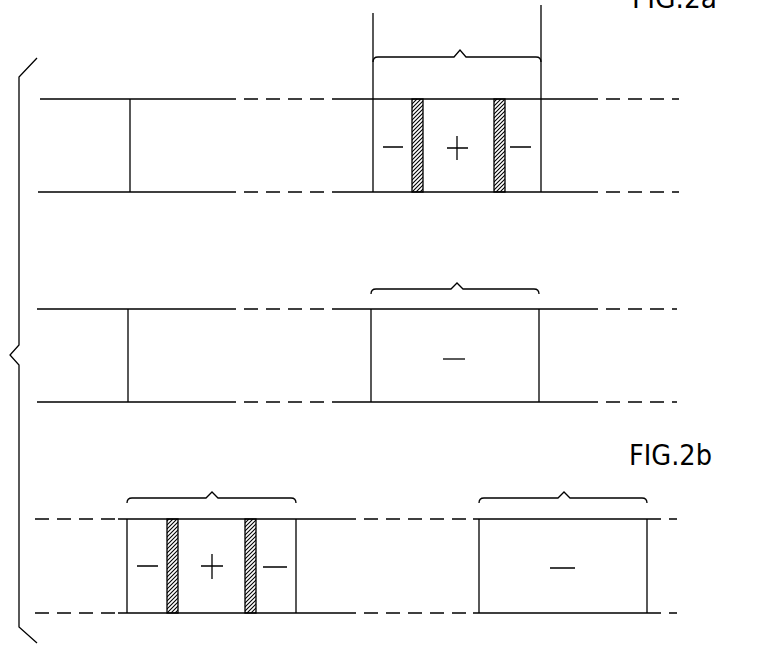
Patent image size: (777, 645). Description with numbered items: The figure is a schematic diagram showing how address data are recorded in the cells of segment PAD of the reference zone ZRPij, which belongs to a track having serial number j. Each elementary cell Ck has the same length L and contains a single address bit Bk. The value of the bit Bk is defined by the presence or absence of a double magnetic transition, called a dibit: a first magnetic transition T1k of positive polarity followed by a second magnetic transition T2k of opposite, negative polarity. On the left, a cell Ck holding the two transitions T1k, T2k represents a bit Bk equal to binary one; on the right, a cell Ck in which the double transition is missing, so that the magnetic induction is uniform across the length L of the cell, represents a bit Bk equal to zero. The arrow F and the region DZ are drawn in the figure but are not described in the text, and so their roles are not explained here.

The reference zone ZRPij is at (131, 99).
The dead zone DZ is at (130, 192).
The first magnetic transition T1k is at (428, 130).
The second magnetic transition T2k is at (509, 130).
The elementary cell Ck is at (387, 268).
The cell length L is at (541, 24).
The direction of movement F is at (197, 24).
The address bit Bk is at (471, 341).